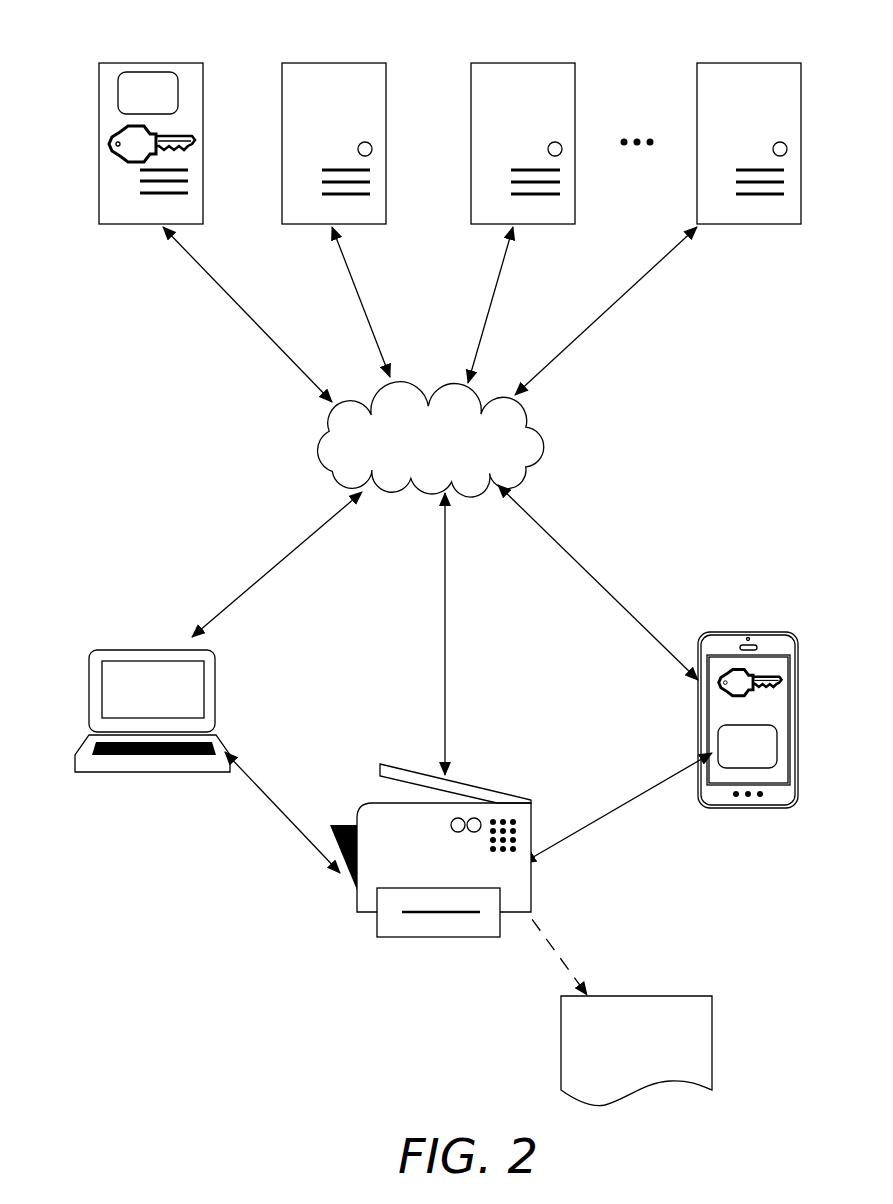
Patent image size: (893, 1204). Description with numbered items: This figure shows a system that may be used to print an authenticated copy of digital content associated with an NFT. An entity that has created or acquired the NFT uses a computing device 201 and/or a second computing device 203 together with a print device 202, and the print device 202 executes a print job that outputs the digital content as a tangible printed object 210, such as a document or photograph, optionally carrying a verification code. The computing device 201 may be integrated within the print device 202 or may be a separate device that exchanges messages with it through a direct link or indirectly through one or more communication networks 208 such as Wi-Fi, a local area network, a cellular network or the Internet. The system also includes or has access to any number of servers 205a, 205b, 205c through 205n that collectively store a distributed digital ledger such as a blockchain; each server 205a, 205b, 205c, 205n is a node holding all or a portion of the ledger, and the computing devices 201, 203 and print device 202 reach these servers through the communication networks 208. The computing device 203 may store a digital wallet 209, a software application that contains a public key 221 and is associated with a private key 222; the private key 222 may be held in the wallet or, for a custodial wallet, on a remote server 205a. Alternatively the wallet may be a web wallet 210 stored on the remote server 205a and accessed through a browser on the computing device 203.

The computing device 201 is at (115, 650).
The print device 202 is at (428, 937).
The computing device 203 is at (748, 632).
The server 205a is at (143, 63).
The server 205b is at (328, 63).
The server 205c is at (518, 63).
The server 205n is at (743, 63).
The communication network 208 is at (524, 447).
The digital wallet 209 is at (778, 748).
The printed object 210 is at (118, 90).
The public key 221 is at (780, 683).
The private key 222 is at (115, 152).